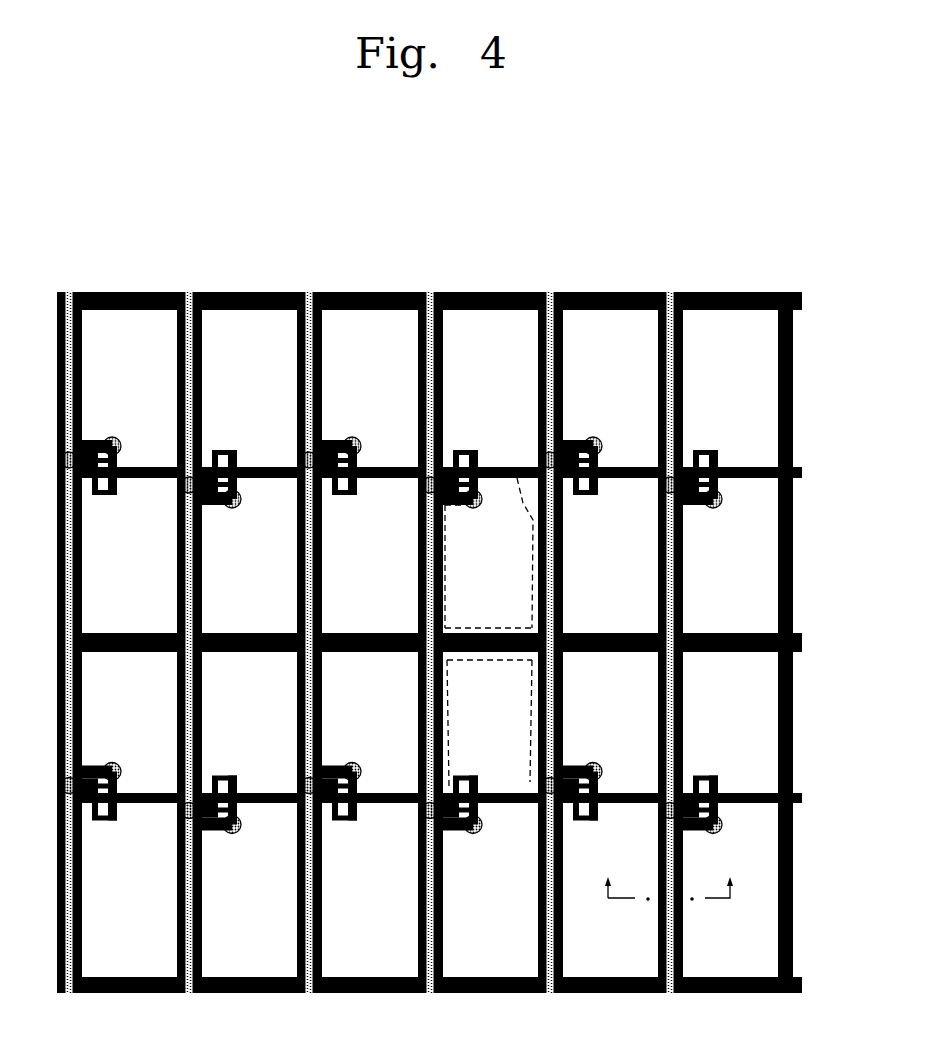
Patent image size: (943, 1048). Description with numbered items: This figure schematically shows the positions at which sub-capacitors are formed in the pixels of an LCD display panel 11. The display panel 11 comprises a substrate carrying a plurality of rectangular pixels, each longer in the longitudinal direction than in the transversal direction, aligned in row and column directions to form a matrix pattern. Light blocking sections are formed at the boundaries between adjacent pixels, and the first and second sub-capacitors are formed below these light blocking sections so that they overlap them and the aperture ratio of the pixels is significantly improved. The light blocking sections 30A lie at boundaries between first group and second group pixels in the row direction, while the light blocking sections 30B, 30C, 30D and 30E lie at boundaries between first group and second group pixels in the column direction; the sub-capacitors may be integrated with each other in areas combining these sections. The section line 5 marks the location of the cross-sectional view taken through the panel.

The display panel 11 is at (635, 248).
The light blocking section 30A is at (490, 628).
The light blocking section 30B is at (447, 537).
The light blocking section 30C is at (521, 466).
The light blocking section 30D is at (450, 693).
The light blocking section 30E is at (530, 737).
The section line of Fig. 5 is at (672, 877).